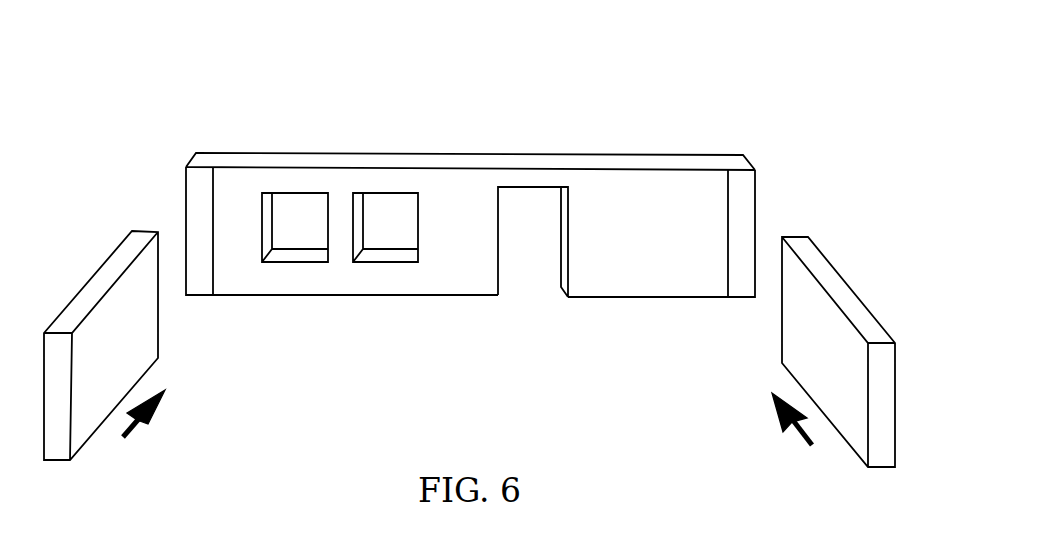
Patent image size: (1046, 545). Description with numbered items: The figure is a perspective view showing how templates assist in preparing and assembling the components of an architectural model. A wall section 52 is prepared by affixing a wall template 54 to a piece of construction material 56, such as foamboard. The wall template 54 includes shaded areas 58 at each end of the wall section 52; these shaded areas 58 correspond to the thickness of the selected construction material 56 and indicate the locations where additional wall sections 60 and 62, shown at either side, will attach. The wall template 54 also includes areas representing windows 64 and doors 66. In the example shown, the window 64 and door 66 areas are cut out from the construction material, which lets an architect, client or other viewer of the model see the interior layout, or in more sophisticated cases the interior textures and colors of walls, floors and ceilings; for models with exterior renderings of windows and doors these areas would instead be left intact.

The wall section 52 is at (650, 80).
The wall template 54 is at (249, 182).
The construction material 56 is at (382, 161).
The shaded areas 58 is at (182, 203).
The wall section 60 is at (825, 313).
The wall section 62 is at (113, 308).
The windows 64 is at (294, 233).
The doors 66 is at (535, 270).